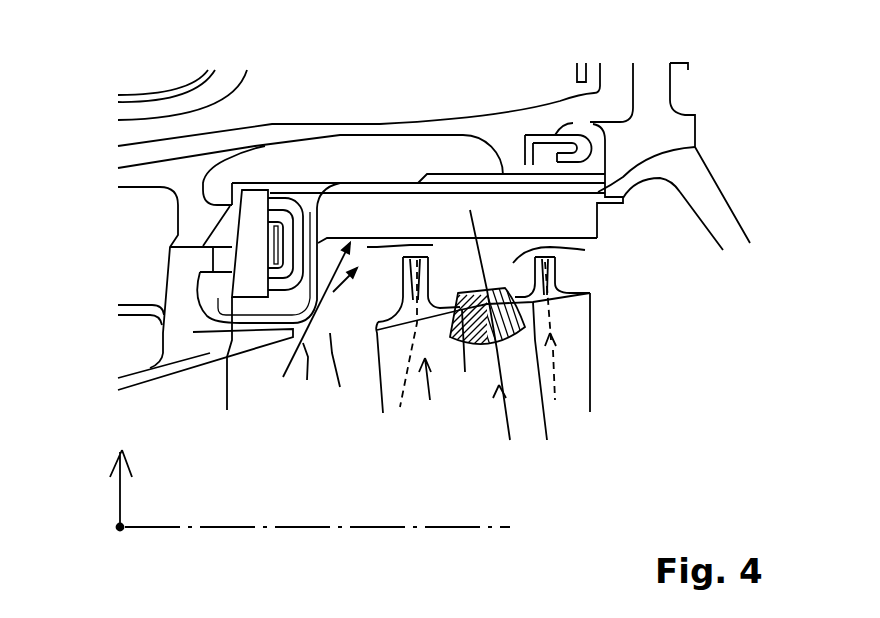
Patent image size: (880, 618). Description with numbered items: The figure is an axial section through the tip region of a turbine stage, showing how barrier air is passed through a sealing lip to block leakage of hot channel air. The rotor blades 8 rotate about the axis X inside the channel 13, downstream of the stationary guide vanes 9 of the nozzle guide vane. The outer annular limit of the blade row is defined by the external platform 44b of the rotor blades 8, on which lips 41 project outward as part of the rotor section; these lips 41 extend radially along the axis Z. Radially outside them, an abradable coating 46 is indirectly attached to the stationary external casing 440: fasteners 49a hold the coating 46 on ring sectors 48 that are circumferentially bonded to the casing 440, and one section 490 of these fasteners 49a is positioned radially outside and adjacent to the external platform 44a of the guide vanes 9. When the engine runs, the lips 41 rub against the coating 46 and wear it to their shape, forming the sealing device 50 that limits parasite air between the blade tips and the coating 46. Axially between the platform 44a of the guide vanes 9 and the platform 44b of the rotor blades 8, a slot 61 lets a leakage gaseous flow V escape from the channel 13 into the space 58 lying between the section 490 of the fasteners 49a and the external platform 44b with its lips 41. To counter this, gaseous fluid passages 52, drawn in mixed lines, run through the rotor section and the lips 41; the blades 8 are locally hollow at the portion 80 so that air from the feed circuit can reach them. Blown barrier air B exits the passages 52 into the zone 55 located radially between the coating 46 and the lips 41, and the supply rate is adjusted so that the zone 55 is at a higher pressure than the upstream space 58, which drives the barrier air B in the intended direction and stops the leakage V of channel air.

The rotor blades 8 is at (615, 385).
The guide vanes 9 is at (140, 413).
The channel 13 is at (279, 437).
The lips 41 is at (555, 263).
The external platform of the guide vanes 44a is at (190, 352).
The external platform of the rotor blades 44b is at (538, 400).
The abradable coating 46 is at (193, 332).
The ring sectors 48 is at (695, 145).
The fasteners 49a is at (563, 150).
The sealing device 50 is at (349, 175).
The gaseous fluid passages 52 is at (487, 290).
The zone 55 is at (585, 250).
The space 58 is at (367, 247).
The slot 61 is at (378, 322).
The hollow portion of the blade 80 is at (567, 383).
The external casing 440 is at (415, 117).
The section of the fasteners 490 is at (277, 293).
The barrier air flux B is at (557, 367).
The leakage gaseous flow V is at (320, 330).
The axis X is at (162, 530).
The radial axis Z is at (112, 490).